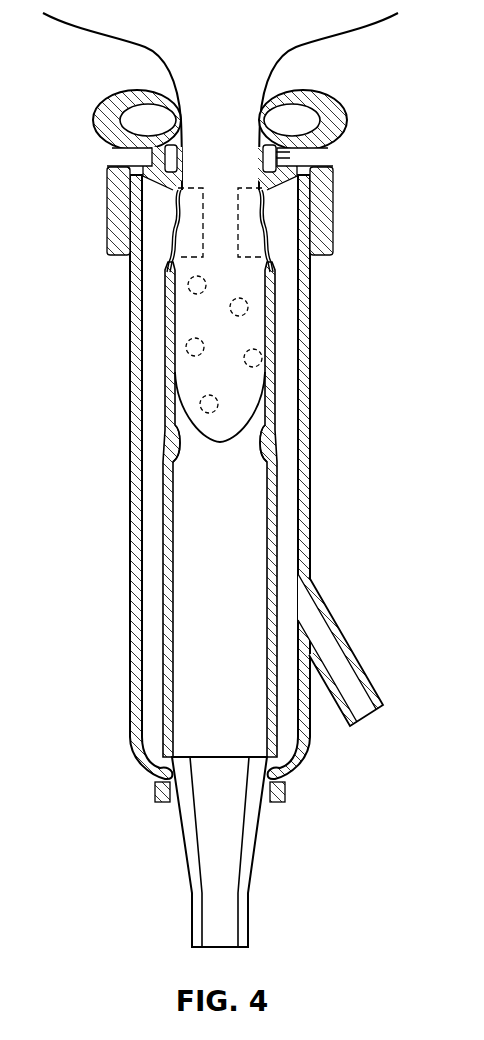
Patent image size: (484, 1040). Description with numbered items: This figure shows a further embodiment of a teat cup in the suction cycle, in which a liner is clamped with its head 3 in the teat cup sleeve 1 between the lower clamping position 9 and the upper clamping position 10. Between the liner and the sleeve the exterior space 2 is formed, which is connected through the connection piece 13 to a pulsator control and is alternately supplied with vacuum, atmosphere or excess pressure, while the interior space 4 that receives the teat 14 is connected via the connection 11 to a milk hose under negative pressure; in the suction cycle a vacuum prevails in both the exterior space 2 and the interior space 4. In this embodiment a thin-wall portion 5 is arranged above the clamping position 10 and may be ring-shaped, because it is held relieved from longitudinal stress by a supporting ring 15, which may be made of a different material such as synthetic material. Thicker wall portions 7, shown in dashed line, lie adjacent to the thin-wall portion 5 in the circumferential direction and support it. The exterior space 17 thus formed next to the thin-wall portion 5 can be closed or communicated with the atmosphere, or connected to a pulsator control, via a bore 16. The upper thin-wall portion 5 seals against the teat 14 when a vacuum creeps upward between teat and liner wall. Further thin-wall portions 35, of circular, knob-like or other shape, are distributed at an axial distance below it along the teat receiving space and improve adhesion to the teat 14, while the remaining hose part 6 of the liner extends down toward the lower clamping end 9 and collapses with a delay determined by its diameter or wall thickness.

The teat cup sleeve 1 is at (310, 365).
The exterior space 2 is at (288, 476).
The head 3 is at (348, 119).
The interior space 4 is at (193, 602).
The thin-wall portion 5 is at (257, 153).
The hose part 6 is at (165, 509).
The thicker wall portions 7 is at (218, 206).
The lower clamping position 9 is at (158, 786).
The upper clamping position 10 is at (143, 165).
The connection 11 is at (258, 845).
The connection piece 13 is at (350, 640).
The teat 14 is at (234, 356).
The supporting ring 15 is at (155, 157).
The bore 16 is at (291, 155).
The exterior space 17 is at (284, 121).
The further thin-wall portions 35 is at (188, 283).